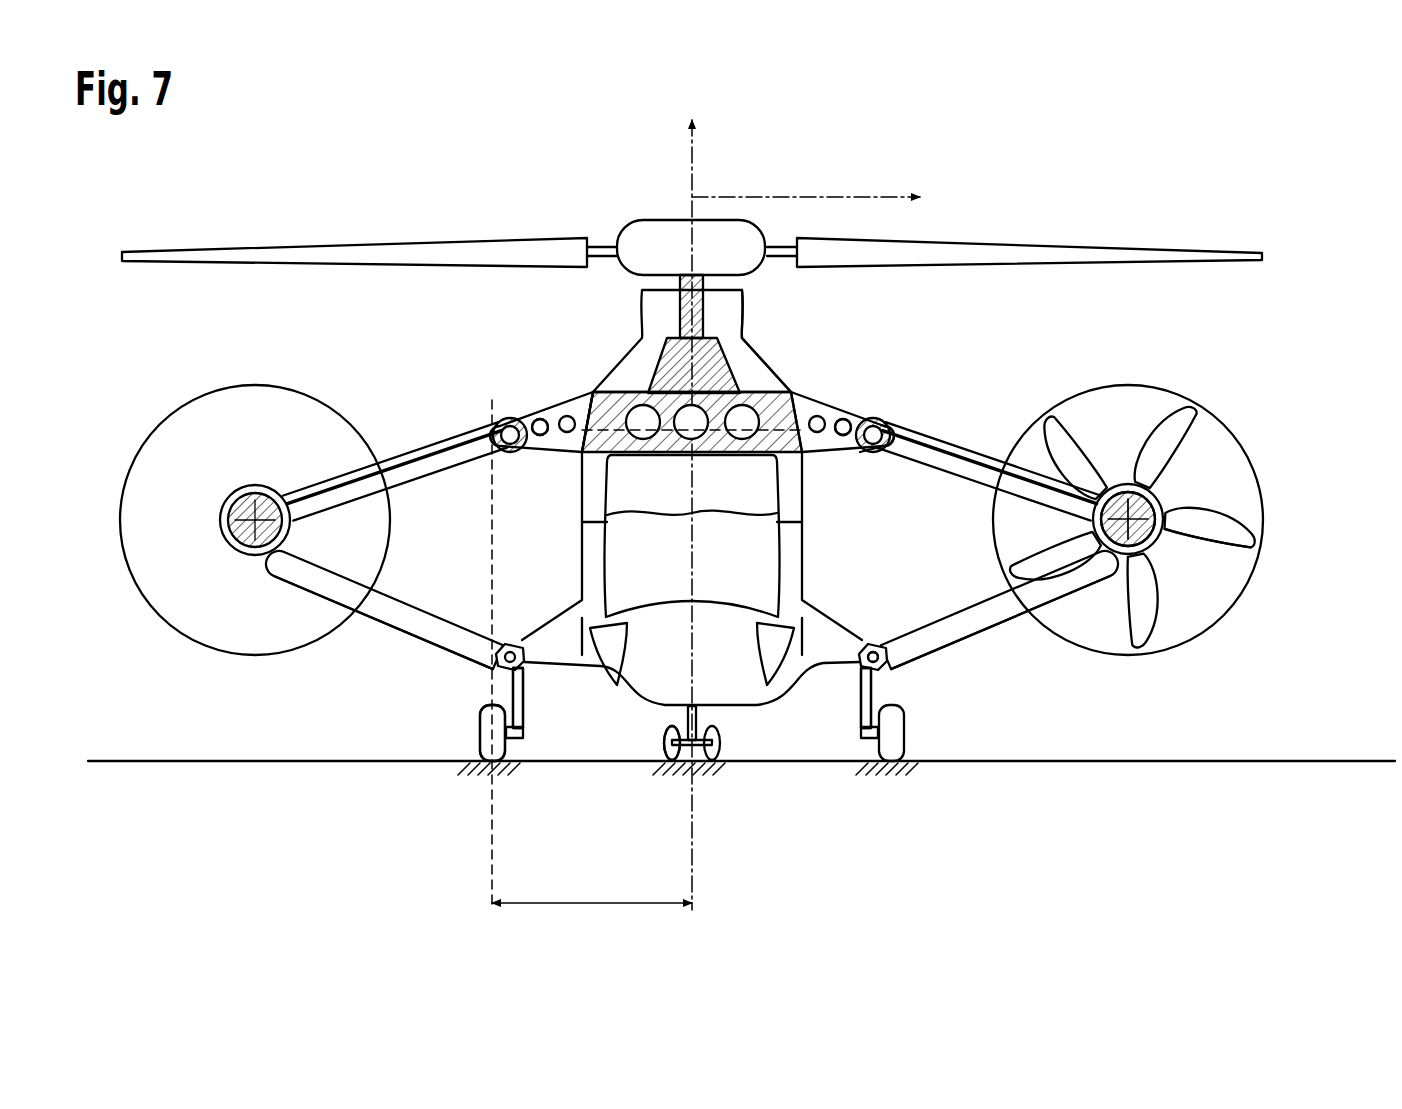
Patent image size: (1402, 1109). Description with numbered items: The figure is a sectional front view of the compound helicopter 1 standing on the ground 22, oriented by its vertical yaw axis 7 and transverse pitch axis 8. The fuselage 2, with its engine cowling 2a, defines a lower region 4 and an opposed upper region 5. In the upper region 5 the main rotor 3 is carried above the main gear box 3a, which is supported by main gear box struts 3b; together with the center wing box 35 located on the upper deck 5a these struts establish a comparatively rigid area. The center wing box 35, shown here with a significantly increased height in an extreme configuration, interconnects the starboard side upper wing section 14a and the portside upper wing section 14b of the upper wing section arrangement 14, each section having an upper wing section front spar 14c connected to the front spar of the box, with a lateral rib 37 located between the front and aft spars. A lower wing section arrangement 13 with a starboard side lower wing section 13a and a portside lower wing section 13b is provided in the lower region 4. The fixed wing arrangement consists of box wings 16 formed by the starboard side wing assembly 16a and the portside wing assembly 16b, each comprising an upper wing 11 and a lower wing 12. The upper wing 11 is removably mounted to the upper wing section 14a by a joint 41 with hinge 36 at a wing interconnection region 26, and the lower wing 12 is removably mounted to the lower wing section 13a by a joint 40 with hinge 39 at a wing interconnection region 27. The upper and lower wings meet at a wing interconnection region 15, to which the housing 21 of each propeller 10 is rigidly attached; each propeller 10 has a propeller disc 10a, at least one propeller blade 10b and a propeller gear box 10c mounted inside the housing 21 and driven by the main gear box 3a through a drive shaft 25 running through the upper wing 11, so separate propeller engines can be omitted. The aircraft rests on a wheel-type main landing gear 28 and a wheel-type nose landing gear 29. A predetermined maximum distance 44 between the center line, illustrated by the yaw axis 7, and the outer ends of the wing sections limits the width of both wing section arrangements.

The compound helicopter 1 is at (292, 205).
The fuselage 2 is at (578, 506).
The engine cowling 2a is at (750, 326).
The main rotor 3 is at (1100, 237).
The main gear box 3a is at (714, 377).
The main gear box struts 3b is at (776, 380).
The lower region 4 is at (750, 722).
The upper region 5 is at (637, 335).
The upper deck 5a is at (622, 420).
The yaw axis 7 is at (700, 160).
The pitch axis 8 is at (852, 193).
The propeller 10 is at (1262, 461).
The propeller disc 10a is at (1188, 497).
The propeller blade 10b is at (1208, 535).
The propeller gear box 10c is at (1137, 536).
The upper wing 11 is at (970, 446).
The lower wing 12 is at (960, 623).
The lower wing section arrangement 13 is at (822, 674).
The starboard side lower wing section 13a is at (836, 668).
The portside lower wing section 13b is at (587, 680).
The upper wing section arrangement 14 is at (853, 461).
The starboard side upper wing section 14a is at (884, 417).
The portside upper wing section 14b is at (537, 410).
The upper wing section front spar 14c is at (796, 391).
The wing interconnection region 15 is at (1170, 552).
The box wings 16 is at (411, 659).
The starboard side wing assembly 16a is at (376, 632).
The portside wing assembly 16b is at (1017, 630).
The housing 21 is at (1128, 481).
The ground 22 is at (546, 768).
The drive shaft 25 is at (1004, 452).
The wing interconnection region 26 is at (887, 460).
The wing interconnection region 27 is at (880, 641).
The wheel-type main landing gear 28 is at (532, 708).
The wheel-type nose landing gear 29 is at (705, 722).
The center wing box 35 is at (676, 456).
The hinge 36 is at (897, 411).
The lateral rib 37 is at (816, 444).
The hinge 39 is at (860, 646).
The joint 40 is at (895, 673).
The joint 41 is at (907, 434).
The predetermined maximum distance 44 is at (595, 906).